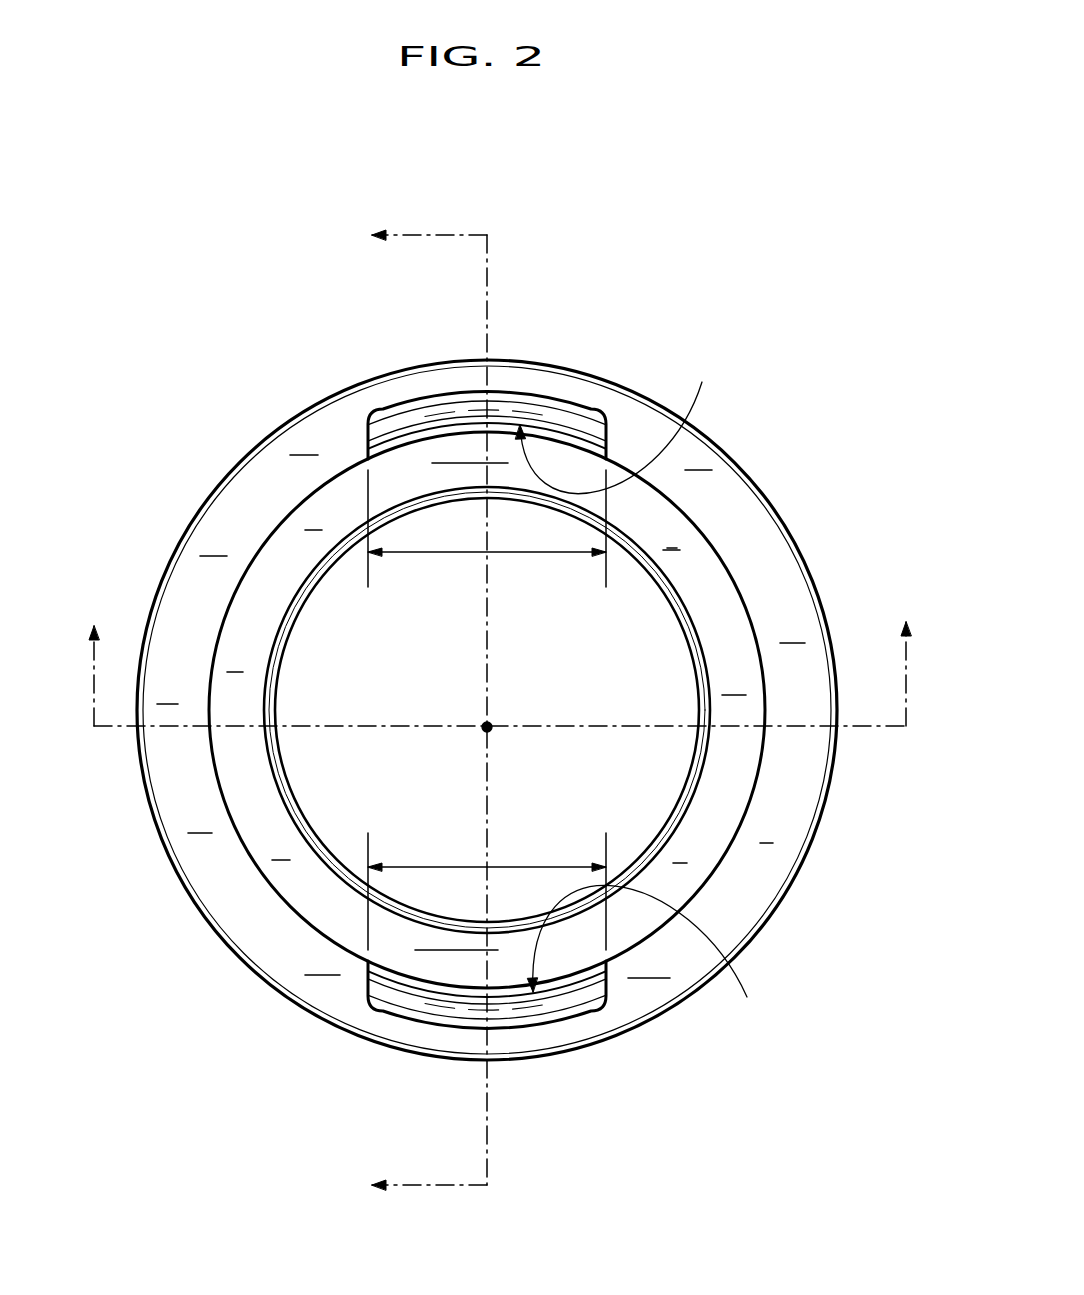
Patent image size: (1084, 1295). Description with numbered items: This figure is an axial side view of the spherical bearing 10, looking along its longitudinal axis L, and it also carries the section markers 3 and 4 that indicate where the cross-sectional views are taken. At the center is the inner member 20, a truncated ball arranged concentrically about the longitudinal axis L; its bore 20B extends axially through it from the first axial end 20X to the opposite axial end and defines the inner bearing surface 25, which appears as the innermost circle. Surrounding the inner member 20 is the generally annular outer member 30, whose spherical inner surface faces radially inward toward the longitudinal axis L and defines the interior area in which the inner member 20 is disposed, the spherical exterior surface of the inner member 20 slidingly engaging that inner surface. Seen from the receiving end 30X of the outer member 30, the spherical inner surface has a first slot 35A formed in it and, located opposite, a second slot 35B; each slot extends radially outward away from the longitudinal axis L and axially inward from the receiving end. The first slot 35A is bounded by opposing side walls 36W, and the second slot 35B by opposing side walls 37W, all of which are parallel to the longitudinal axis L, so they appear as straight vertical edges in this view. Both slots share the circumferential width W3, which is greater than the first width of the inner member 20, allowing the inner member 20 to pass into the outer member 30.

The spherical bearing 10 is at (667, 193).
The inner member 20 is at (277, 815).
The bore 20B is at (387, 773).
The first axial end 20X is at (718, 792).
The inner bearing surface 25 is at (290, 651).
The outer member 30 is at (828, 575).
The receiving end 30X is at (727, 500).
The first slot 35A is at (619, 421).
The second slot 35B is at (658, 948).
The opposing side walls 36W is at (373, 436).
The opposing side walls 37W is at (375, 985).
The circumferential width W3 is at (522, 553).
The longitudinal axis L is at (487, 727).
The section line 3- 3 is at (429, 711).
The section line 4- 4 is at (500, 674).